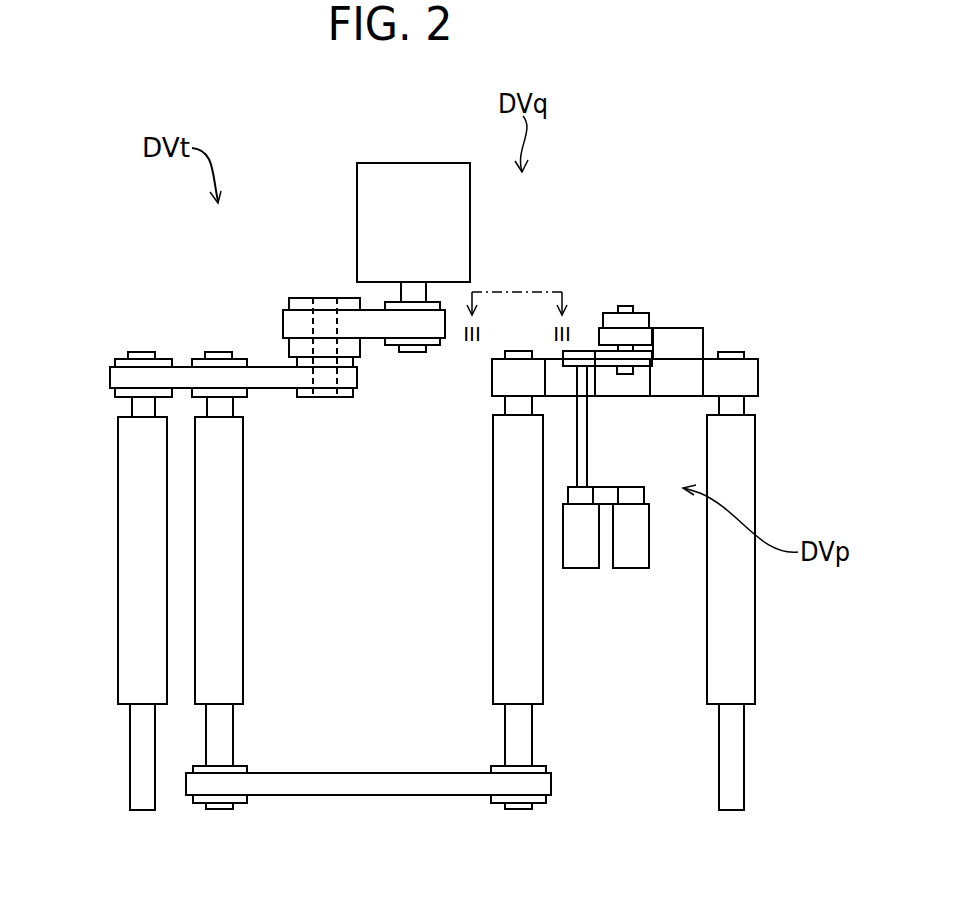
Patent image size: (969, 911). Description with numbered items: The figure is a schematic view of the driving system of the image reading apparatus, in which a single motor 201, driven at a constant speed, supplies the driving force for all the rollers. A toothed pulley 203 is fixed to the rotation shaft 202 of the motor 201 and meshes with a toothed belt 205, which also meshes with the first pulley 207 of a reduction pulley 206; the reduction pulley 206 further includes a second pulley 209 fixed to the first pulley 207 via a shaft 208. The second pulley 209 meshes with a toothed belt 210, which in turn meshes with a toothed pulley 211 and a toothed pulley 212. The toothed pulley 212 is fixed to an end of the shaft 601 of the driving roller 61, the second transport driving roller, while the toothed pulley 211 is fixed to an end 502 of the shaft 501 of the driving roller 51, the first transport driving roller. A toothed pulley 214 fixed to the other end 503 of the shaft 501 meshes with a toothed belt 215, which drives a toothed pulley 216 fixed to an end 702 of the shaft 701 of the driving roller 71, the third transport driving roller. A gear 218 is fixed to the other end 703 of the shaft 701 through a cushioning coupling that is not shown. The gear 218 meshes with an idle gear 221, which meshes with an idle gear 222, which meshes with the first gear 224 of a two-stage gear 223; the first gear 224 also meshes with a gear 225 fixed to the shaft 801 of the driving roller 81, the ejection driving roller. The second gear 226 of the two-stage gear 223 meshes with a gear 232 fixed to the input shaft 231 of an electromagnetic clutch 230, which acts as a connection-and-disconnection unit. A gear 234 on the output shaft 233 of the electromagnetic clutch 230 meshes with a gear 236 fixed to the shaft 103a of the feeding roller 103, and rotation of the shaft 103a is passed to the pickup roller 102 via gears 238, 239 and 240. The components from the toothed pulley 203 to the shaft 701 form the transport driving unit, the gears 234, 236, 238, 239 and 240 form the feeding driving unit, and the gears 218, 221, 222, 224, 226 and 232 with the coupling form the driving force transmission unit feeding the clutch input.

The motor 201 is at (413, 162).
The rotation shaft 202 is at (415, 296).
The toothed pulley 203 is at (393, 346).
The toothed belt 205 is at (373, 315).
The reduction pulley 206 is at (291, 296).
The first pulley 207 is at (307, 297).
The shaft 208 is at (317, 378).
The second pulley 209 is at (323, 398).
The toothed belt 210 is at (268, 375).
The toothed pulley 211 is at (200, 353).
The toothed pulley 212 is at (125, 360).
The end of shaft 502 is at (220, 351).
The shaft 601 is at (140, 405).
The driving roller 61 is at (118, 600).
The shaft 501 is at (228, 405).
The driving roller 51 is at (243, 600).
The toothed pulley 214 is at (248, 803).
The other end of shaft 503 is at (220, 810).
The toothed belt 215 is at (378, 796).
The toothed pulley 216 is at (546, 803).
The end of shaft 702 is at (518, 810).
The shaft 701 is at (505, 733).
The driving roller 71 is at (493, 635).
The other end of shaft 703 is at (522, 352).
The gear 218 is at (497, 358).
The idle gear 221 is at (552, 367).
The idle gear 222 is at (637, 390).
The output shaft 233 is at (623, 375).
The electromagnetic clutch 230 is at (600, 310).
The input shaft 231 is at (625, 305).
The gear 232 is at (640, 336).
The second gear 226 is at (682, 328).
The two-stage gear 223 is at (711, 350).
The gear 225 is at (748, 356).
The first gear 224 is at (690, 397).
The gear 234 is at (642, 390).
The shaft 801 is at (740, 403).
The driving roller 81 is at (755, 660).
The gear 236 is at (577, 408).
The gear 239 is at (607, 496).
The gear 238 is at (568, 494).
The shaft 103a is at (580, 453).
The gear 240 is at (644, 493).
The feeding roller 103 is at (580, 570).
The pickup roller 102 is at (628, 570).